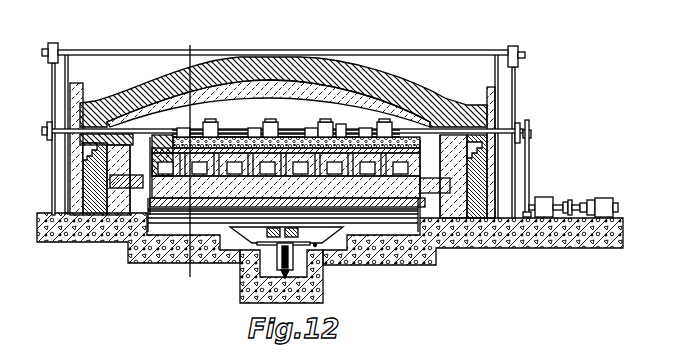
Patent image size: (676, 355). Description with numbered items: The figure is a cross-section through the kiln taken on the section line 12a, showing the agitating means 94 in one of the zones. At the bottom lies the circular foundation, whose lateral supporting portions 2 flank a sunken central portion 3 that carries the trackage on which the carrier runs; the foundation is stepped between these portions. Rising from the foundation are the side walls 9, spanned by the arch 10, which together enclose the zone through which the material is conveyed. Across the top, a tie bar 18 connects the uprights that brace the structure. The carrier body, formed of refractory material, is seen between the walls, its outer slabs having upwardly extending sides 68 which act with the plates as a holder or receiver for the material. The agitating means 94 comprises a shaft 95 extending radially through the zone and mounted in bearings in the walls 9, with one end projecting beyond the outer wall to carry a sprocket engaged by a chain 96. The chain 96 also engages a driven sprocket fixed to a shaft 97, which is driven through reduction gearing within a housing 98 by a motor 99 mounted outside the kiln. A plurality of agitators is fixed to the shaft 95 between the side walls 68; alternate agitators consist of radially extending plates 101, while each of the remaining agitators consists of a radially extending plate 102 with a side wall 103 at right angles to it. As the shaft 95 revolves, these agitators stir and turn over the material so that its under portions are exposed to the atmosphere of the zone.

The lateral supporting portions 2 is at (88, 243).
The sunken central portion 3 is at (288, 276).
The side walls 9 is at (51, 129).
The arch 10 is at (283, 92).
The section line 12a is at (202, 288).
The top tie bar 18 is at (457, 50).
The upwardly extending sides 68 is at (129, 170).
The means for agitating the material 94 is at (399, 136).
The shaft 95 is at (408, 128).
The chain 96 is at (530, 160).
The shaft 97 is at (536, 197).
The housing 98 is at (553, 203).
The motor 99 is at (596, 200).
The radially extending plates 101 is at (312, 126).
The radially extending plate 102 is at (267, 120).
The side wall 103 is at (318, 120).